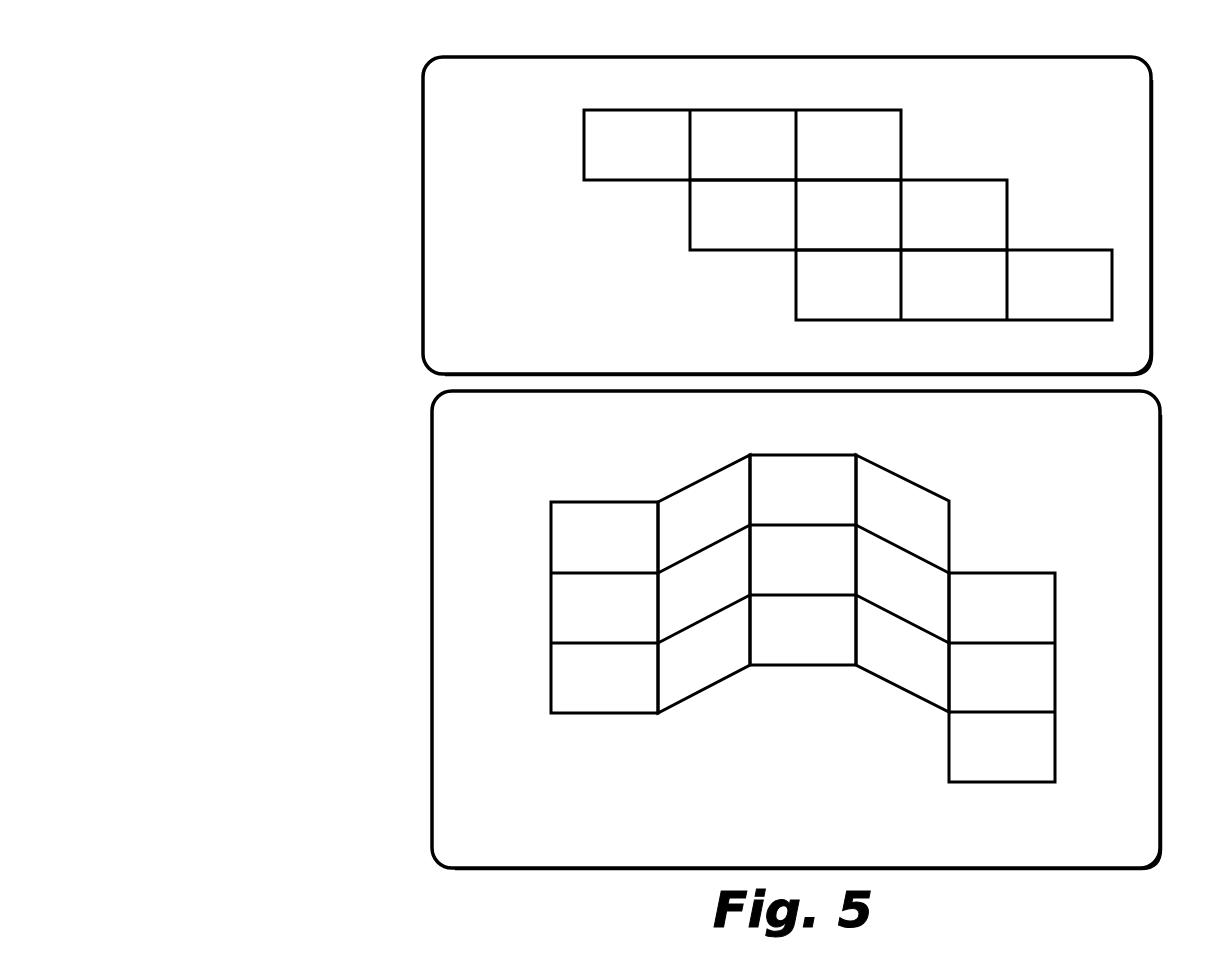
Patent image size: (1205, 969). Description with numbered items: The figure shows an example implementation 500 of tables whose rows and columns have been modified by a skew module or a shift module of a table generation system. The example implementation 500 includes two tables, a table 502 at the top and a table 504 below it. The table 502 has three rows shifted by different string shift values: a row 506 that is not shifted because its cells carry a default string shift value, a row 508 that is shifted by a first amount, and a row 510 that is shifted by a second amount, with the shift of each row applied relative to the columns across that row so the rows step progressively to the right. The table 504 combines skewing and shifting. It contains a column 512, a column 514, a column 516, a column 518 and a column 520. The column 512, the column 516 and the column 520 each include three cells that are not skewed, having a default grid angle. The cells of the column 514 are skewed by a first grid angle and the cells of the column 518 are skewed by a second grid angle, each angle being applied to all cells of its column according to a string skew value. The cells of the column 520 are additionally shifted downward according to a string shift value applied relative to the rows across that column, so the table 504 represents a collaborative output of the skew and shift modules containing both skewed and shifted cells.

The example implementation 500 is at (202, 74).
The table 502 is at (806, 90).
The table 504 is at (814, 424).
The row 506 is at (564, 145).
The row 508 is at (650, 215).
The row 510 is at (765, 286).
The column 512 is at (612, 744).
The column 514 is at (708, 714).
The column 516 is at (795, 681).
The column 518 is at (893, 709).
The column 520 is at (996, 798).